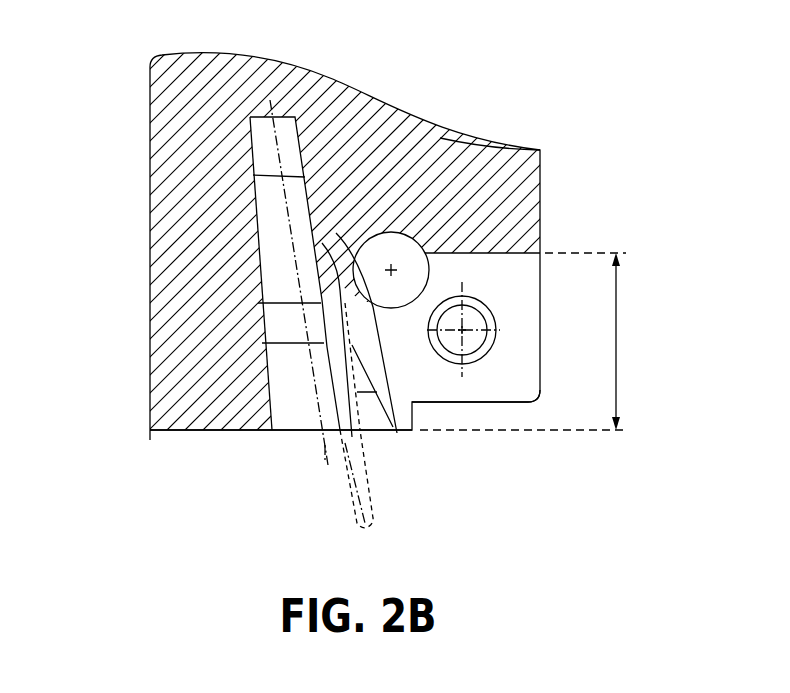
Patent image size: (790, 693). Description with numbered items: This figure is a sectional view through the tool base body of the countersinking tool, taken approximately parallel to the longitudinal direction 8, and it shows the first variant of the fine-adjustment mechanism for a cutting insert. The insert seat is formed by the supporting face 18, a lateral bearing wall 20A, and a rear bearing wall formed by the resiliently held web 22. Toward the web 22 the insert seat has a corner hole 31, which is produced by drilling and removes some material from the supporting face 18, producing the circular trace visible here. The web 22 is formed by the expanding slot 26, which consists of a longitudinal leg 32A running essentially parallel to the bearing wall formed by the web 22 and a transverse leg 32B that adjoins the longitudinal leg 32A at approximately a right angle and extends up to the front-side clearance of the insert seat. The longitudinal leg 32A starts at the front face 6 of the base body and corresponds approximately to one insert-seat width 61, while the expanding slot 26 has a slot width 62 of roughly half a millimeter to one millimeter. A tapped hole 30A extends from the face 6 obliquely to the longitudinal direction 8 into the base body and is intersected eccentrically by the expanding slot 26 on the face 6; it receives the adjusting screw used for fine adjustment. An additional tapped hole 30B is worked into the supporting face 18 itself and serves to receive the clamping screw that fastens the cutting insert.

The front face 6 is at (210, 427).
The longitudinal direction 8 is at (150, 108).
The supporting face 18 is at (515, 293).
The lateral bearing wall 20A is at (497, 180).
The web 22 is at (368, 340).
The expanding slot 26 is at (345, 377).
The tapped hole 30A is at (270, 218).
The additional tapped hole 30B is at (480, 317).
The corner hole 31 is at (410, 232).
The longitudinal leg 32A is at (262, 343).
The transverse leg 32B is at (300, 255).
The insert-seat width 61 is at (620, 353).
The slot width 62 is at (368, 528).